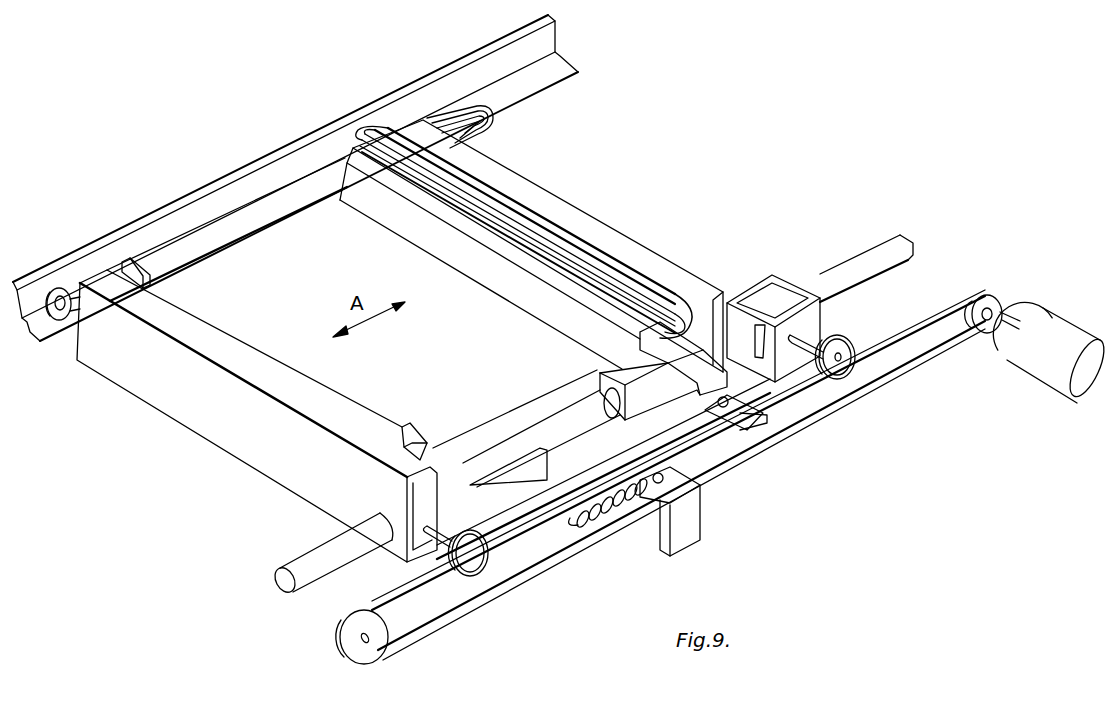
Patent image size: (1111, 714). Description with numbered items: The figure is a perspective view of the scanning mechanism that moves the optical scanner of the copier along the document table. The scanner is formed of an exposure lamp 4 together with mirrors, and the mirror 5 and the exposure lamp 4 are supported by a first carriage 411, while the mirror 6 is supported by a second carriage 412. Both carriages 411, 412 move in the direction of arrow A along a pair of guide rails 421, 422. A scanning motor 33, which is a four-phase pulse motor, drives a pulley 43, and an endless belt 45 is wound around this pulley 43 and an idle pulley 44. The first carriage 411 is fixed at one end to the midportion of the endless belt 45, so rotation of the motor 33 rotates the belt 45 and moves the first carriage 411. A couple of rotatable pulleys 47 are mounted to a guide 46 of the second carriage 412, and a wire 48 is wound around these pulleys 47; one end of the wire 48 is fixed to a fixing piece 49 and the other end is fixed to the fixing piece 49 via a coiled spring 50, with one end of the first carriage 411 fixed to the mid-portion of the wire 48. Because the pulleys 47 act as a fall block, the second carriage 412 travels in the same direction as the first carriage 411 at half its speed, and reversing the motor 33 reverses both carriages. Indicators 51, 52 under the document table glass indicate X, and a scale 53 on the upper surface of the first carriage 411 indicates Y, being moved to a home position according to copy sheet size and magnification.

The exposure lamp 4 is at (537, 243).
The mirror 5 is at (383, 218).
The mirror 6 is at (247, 333).
The scanning motor 33 is at (1035, 385).
The first carriage 411 is at (583, 207).
The second carriage 412 is at (160, 393).
The guide rail 421 is at (427, 75).
The guide rail 422 is at (835, 262).
The pulley 43 is at (995, 300).
The idle pulley 44 is at (372, 655).
The endless belt 45 is at (937, 365).
The guide 46 is at (737, 290).
The rotatable pulleys 47 is at (845, 370).
The wire 48 is at (777, 415).
The fixing piece 49 is at (690, 518).
The coiled spring 50 is at (578, 527).
The indicator 51 is at (148, 266).
The indicator 52 is at (405, 425).
The scale 53 is at (500, 188).